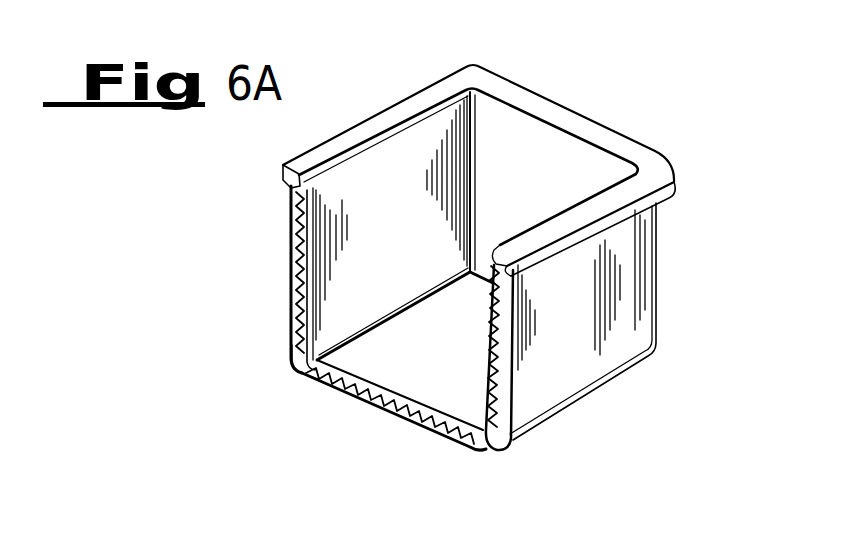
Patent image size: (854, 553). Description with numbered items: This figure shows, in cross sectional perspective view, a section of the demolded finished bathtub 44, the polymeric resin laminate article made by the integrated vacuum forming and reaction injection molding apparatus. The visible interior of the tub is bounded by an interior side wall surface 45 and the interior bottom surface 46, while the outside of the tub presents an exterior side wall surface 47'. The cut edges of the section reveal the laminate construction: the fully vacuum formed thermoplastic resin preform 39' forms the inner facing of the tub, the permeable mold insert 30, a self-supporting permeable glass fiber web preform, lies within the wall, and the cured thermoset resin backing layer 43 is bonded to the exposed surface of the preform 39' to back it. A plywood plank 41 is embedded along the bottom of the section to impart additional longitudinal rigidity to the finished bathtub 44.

The finished bathtub 44 is at (632, 89).
The interior side wall surface 45 is at (402, 234).
The interior bottom surface 46 is at (447, 361).
The exterior side wall surface 47' is at (583, 321).
The fully vacuum formed thermoplastic resin preform 39' is at (273, 279).
The permeable mold insert 30 is at (318, 383).
The plywood plank 41 is at (386, 410).
The cured thermoset resin backing layer 43 is at (472, 446).